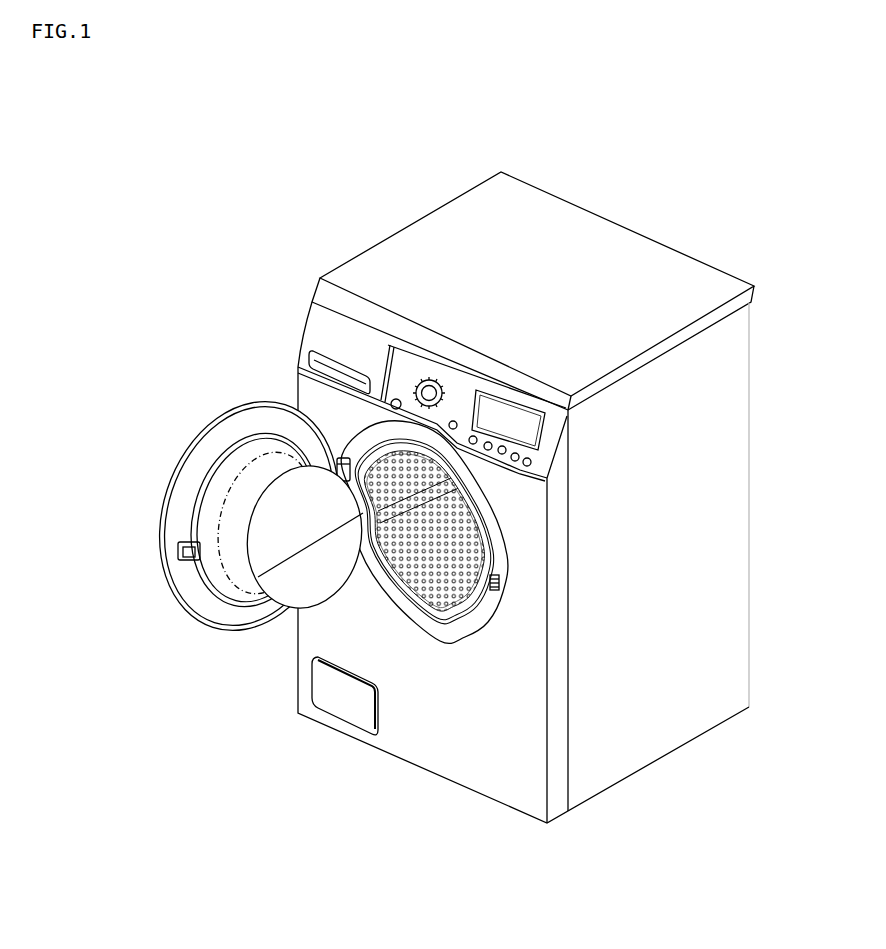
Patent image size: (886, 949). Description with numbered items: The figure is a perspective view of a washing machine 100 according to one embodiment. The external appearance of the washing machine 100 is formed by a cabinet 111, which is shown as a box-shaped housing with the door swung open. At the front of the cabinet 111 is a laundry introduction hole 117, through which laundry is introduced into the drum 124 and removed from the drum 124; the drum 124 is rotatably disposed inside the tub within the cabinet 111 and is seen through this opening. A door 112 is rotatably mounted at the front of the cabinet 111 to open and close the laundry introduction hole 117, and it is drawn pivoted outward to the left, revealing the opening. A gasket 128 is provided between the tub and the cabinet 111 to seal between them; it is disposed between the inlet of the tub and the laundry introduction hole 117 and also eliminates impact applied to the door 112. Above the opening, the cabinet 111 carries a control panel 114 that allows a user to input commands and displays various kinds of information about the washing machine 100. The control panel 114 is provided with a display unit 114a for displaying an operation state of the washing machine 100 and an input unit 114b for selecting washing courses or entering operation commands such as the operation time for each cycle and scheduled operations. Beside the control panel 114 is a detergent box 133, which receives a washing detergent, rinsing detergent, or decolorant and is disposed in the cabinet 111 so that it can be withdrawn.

The washing machine 100 is at (281, 229).
The cabinet 111 is at (668, 730).
The door 112 is at (186, 462).
The control panel 114 is at (560, 446).
The display unit 114a is at (421, 382).
The input unit 114b is at (506, 417).
The laundry introduction hole 117 is at (445, 603).
The drum 124 is at (450, 590).
The gasket 128 is at (422, 582).
The detergent box 133 is at (328, 334).